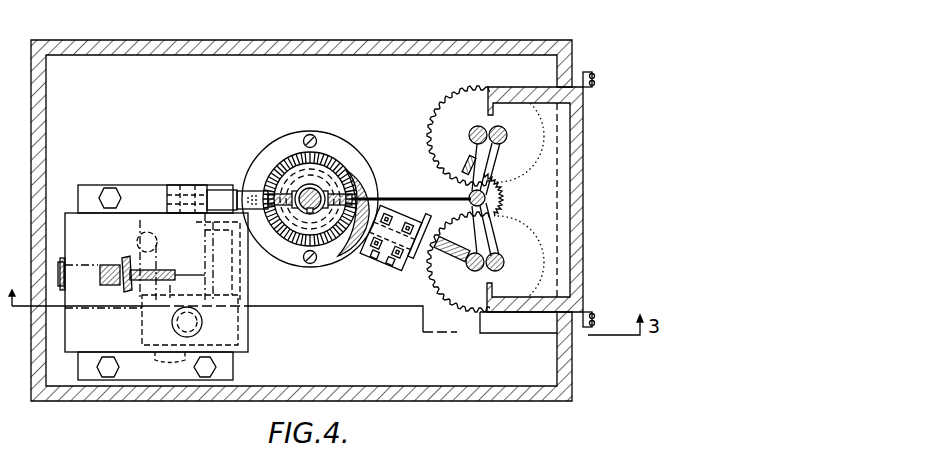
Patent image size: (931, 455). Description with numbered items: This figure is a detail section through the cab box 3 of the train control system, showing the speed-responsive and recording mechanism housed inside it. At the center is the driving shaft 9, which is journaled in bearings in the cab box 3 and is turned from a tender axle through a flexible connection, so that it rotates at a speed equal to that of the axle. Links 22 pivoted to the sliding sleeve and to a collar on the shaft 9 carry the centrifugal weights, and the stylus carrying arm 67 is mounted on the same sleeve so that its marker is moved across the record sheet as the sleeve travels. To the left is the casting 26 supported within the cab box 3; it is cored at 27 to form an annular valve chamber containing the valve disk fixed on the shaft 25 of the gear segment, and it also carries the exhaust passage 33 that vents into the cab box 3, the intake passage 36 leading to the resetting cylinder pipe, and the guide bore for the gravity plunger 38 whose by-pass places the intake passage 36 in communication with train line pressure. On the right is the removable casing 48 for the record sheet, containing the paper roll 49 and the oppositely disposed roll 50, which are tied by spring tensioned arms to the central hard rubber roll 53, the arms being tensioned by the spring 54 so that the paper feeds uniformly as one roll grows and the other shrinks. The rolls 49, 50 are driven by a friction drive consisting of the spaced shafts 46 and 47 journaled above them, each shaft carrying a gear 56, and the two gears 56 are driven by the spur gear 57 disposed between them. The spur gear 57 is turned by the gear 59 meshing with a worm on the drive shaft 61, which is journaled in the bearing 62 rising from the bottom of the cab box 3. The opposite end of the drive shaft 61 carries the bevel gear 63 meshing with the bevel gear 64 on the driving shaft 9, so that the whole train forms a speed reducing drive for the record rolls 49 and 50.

The cab box 3 is at (573, 374).
The shaft 9 is at (320, 186).
The links 22 is at (270, 190).
The shaft 25 is at (162, 226).
The casting 26 is at (250, 283).
The core 27 is at (61, 262).
The exhaust passage 33 is at (207, 263).
The intake passage 36 is at (84, 268).
The gravity plunger 38 is at (112, 286).
The shaft 46 is at (476, 273).
The shaft 47 is at (473, 128).
The casing 48 is at (527, 87).
The roll 49 is at (505, 266).
The roll 50 is at (508, 135).
The hard rubber roll 53 is at (500, 190).
The spring 54 is at (490, 204).
The gear 56 is at (447, 103).
The spur gear 57 is at (505, 198).
The gear 59 is at (525, 229).
The drive shaft 61 is at (418, 252).
The bearing 62 is at (387, 248).
The bevel gear 63 is at (370, 197).
The bevel gear 64 is at (325, 158).
The stylus carrying arm 67 is at (428, 197).